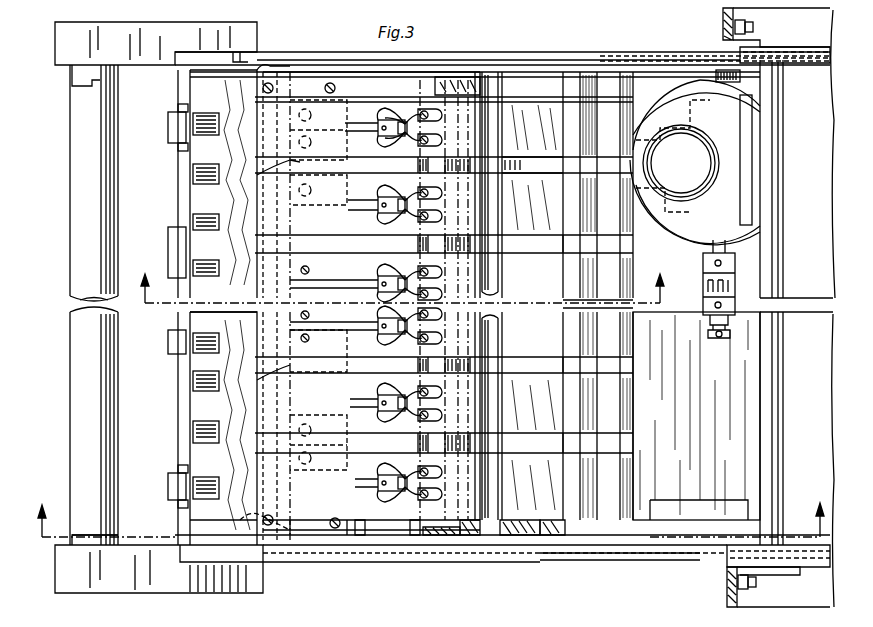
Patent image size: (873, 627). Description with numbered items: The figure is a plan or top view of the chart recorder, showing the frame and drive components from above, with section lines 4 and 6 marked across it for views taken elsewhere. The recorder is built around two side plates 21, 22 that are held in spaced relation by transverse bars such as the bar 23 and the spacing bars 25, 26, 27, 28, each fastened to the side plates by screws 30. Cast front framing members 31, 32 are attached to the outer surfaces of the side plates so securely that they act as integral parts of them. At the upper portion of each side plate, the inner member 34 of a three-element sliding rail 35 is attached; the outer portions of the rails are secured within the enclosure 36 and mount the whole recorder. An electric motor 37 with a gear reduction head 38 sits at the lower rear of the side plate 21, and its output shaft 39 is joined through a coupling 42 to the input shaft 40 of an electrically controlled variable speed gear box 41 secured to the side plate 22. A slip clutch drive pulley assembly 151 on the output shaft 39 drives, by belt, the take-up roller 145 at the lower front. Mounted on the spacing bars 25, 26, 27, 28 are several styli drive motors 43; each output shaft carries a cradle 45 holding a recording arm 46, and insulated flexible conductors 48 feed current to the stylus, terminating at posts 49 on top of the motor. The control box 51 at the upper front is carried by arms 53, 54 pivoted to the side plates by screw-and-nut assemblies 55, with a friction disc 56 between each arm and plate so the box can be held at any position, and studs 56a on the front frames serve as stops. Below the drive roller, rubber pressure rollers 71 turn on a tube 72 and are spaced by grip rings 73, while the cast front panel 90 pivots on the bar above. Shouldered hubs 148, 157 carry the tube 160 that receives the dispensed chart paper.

The side plate 21 is at (325, 62).
The side plate 22 is at (525, 540).
The transverse bar 23 is at (500, 90).
The transverse bar 25 is at (410, 166).
The transverse bar 26 is at (465, 168).
The transverse bar 27 is at (572, 72).
The transverse bar 28 is at (608, 77).
The screw 30 is at (545, 538).
The front framing member 31 is at (60, 45).
The front framing member 32 is at (85, 585).
The inner member 34 is at (470, 78).
The sliding rail 35 is at (802, 49).
The enclosure 36 is at (722, 18).
The electric motor 37 is at (755, 140).
The gear reduction head 38 is at (752, 103).
The output shaft 39 is at (740, 254).
The input shaft 40 is at (732, 336).
The variable speed gear box 41 is at (760, 392).
The coupling 42 is at (735, 282).
The styli drive motor 43 is at (633, 440).
The cradle 45 is at (380, 456).
The recording arm 46 is at (378, 330).
The insulated flexible conductor 48 is at (380, 283).
The post 49 is at (445, 500).
The control box 51 is at (302, 90).
The arm 53 is at (370, 80).
The arm 54 is at (380, 535).
The pivot assembly 55 is at (445, 540).
The friction disc 56 is at (478, 76).
The spacer 56a is at (240, 62).
The pressure roller 71 is at (168, 130).
The tube 72 is at (178, 166).
The grip ring 73 is at (178, 108).
The front panel 90 is at (194, 324).
The take-up roller 145 is at (72, 160).
The shouldered hub 148 is at (70, 80).
The slip clutch drive pulley assembly 151 is at (742, 74).
The shouldered hub 157 is at (82, 546).
The tube 160 is at (70, 280).
The section line 4- 4 is at (401, 279).
The section line 6- 6 is at (430, 508).